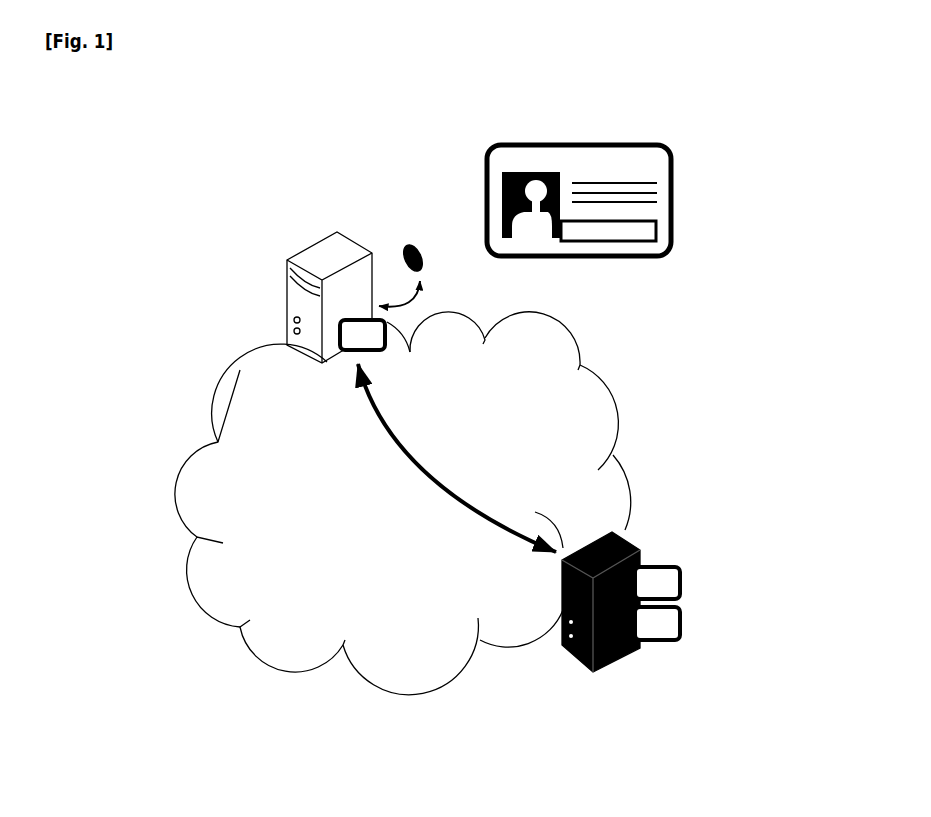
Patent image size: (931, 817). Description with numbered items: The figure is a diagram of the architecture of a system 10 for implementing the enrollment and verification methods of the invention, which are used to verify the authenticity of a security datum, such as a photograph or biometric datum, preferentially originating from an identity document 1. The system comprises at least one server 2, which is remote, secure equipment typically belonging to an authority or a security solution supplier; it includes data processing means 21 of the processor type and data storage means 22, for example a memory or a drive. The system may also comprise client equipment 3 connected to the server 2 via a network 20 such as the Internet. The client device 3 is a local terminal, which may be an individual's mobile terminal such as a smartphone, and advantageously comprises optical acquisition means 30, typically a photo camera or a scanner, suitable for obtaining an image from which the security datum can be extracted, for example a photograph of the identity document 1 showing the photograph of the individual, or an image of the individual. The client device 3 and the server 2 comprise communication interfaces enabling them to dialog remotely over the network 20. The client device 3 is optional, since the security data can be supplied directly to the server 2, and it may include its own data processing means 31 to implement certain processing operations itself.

The identity document 1 is at (484, 142).
The server 2 is at (634, 658).
The client equipment 3 is at (286, 259).
The system 10 is at (465, 445).
The network 20 is at (186, 449).
The data processing means 21 is at (684, 627).
The data storage means 22 is at (684, 580).
The optical acquisition means 30 is at (406, 243).
The data processing means 31 is at (336, 334).